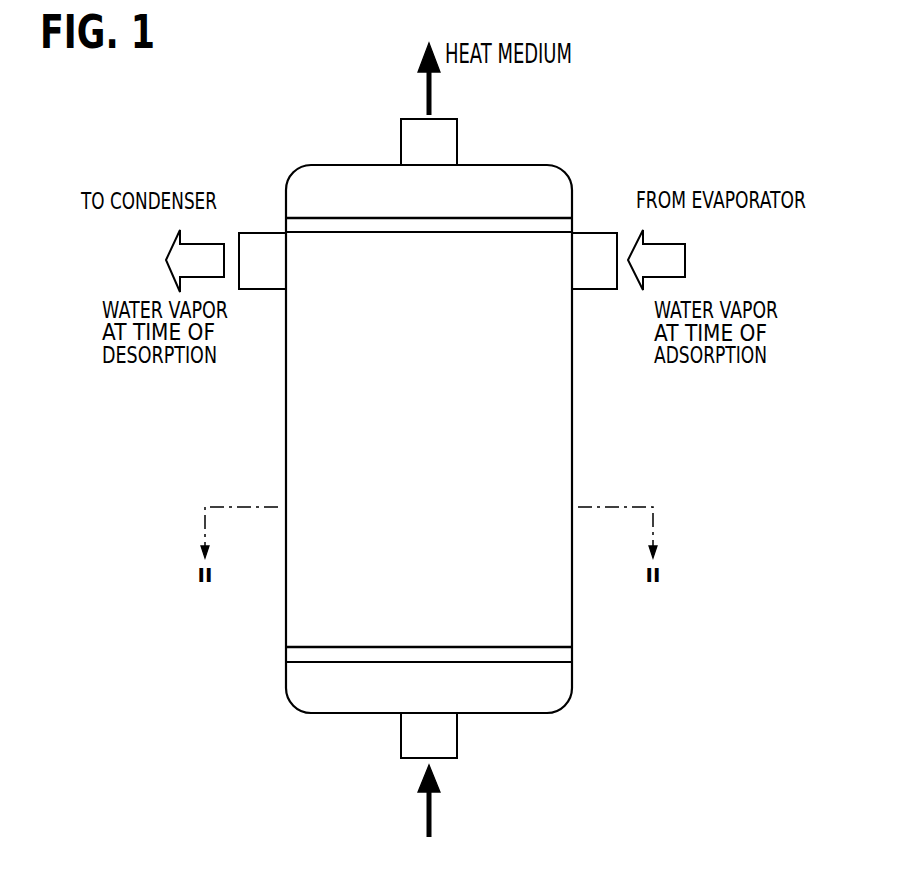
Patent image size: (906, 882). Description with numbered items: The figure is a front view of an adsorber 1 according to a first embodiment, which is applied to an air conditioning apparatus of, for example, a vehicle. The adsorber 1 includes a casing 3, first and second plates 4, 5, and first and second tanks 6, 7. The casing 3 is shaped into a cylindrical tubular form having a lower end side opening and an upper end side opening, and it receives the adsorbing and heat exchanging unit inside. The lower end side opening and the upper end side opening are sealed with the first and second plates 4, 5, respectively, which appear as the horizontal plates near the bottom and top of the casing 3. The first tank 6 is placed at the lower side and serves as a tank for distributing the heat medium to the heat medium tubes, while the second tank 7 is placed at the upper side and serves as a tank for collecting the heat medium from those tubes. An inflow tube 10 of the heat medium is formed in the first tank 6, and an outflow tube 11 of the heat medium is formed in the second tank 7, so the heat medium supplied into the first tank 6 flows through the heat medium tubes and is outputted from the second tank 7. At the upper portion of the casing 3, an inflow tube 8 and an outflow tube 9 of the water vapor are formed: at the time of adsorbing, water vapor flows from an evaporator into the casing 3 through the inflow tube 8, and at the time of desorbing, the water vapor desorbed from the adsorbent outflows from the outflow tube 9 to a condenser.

The adsorber 1 is at (634, 110).
The casing 3 is at (572, 432).
The first plate 4 is at (538, 653).
The second plate 5 is at (523, 220).
The first tank 6 is at (332, 695).
The second tank 7 is at (325, 195).
The inflow tube 8 is at (593, 245).
The outflow tube 9 is at (260, 243).
The inflow tube 10 is at (445, 738).
The outflow tube 11 is at (413, 140).